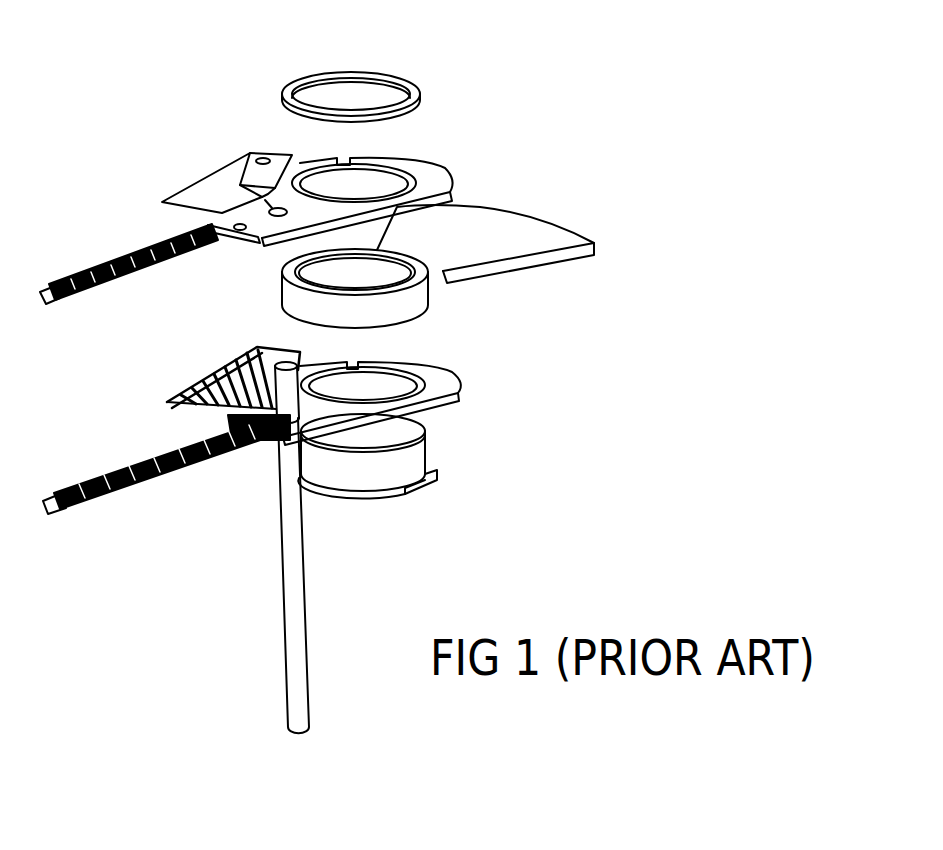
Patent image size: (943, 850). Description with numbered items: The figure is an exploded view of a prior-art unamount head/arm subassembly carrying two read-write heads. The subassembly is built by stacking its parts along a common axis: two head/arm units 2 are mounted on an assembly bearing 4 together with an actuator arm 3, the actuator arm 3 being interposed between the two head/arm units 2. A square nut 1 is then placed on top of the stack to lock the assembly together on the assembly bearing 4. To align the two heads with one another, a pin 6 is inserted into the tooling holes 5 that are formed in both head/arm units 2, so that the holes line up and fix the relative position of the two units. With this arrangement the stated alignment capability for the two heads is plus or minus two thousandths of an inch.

The square nut 1 is at (407, 90).
The head/arm unit 2 is at (432, 178).
The actuator arm 3 is at (467, 237).
The assembly bearing 4 is at (412, 455).
The tooling hole 5 is at (258, 207).
The pin 6 is at (293, 633).